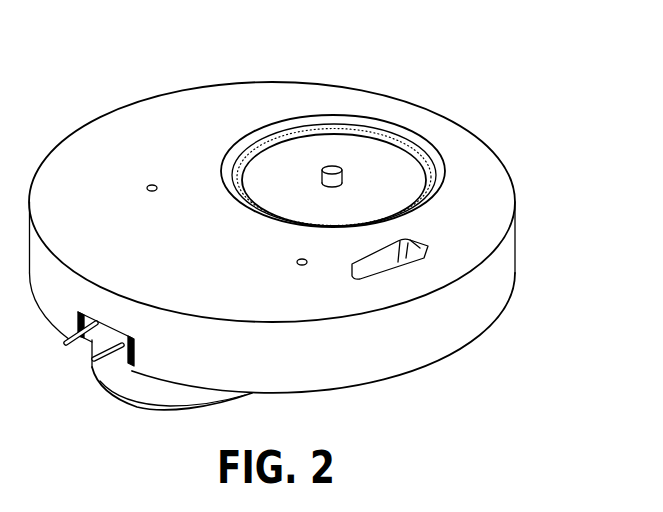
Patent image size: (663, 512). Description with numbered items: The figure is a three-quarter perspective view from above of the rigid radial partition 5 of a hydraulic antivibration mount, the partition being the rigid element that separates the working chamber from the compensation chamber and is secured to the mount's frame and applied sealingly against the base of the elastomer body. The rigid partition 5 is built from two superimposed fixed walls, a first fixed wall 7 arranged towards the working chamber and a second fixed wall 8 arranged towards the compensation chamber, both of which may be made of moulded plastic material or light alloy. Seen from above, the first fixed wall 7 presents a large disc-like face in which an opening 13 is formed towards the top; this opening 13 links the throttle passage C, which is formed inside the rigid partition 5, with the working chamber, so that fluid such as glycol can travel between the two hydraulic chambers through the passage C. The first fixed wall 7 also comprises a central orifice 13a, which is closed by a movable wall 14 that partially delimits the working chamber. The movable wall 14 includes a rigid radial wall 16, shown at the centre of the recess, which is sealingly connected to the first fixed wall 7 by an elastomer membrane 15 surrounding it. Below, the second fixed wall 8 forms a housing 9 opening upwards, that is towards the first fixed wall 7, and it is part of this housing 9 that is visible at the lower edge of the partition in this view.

The rigid radial partition 5 is at (433, 73).
The first fixed wall 7 is at (195, 113).
The second fixed wall 8 is at (108, 402).
The housing 9 is at (147, 398).
The opening 13 is at (425, 254).
The orifice 13a is at (268, 128).
The movable wall 14 is at (387, 172).
The elastomer membrane 15 is at (440, 164).
The rigid radial wall 16 is at (350, 157).
The throttle passage C is at (417, 244).